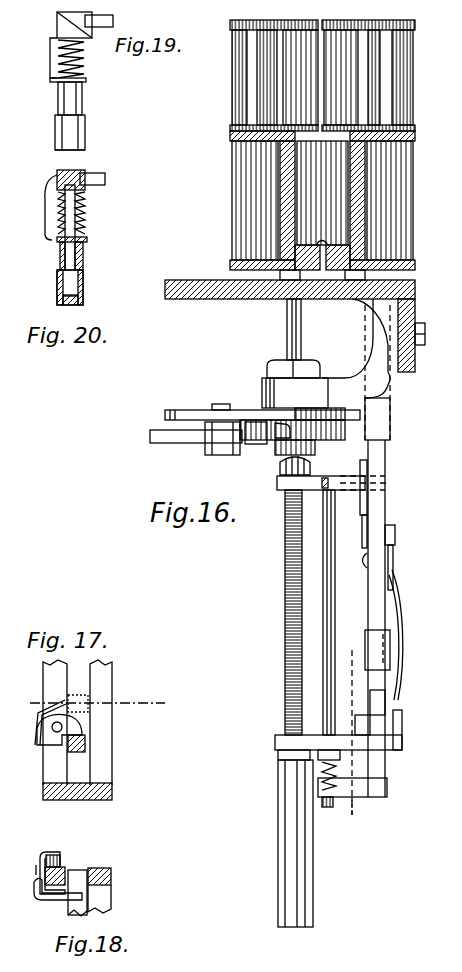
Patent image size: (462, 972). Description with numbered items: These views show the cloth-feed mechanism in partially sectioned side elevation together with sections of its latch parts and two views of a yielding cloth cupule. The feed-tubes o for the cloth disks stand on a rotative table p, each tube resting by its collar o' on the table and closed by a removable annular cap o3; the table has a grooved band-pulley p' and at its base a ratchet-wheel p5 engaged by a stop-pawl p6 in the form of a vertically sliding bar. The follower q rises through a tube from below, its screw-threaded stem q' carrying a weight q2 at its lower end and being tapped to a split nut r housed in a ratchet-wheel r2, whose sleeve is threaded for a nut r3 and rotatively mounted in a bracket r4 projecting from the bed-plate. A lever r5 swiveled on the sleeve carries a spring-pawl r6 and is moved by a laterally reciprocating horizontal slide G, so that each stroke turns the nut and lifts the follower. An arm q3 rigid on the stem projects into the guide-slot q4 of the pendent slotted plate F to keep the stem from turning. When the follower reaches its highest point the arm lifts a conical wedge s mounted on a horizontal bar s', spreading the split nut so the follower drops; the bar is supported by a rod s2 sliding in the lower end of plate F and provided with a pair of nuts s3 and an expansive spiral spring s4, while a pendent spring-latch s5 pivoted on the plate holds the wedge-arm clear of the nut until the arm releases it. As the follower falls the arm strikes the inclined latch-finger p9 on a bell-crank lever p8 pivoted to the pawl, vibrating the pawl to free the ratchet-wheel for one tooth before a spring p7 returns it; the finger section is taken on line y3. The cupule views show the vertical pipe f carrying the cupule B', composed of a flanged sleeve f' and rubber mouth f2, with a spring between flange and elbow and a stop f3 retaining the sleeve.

In FIG. 16, the annular cap o3 is at (322, 23).
In FIG. 16, the feed-tube o is at (322, 145).
In FIG. 16, the collar o' is at (327, 117).
In FIG. 16, the rotative table p is at (314, 205).
In FIG. 16, the band-pulley p' is at (290, 282).
In FIG. 16, the ratchet-wheel p5 is at (365, 277).
In FIG. 16, the stop-pawl p6 is at (370, 304).
In FIG. 16, the screw-threaded stem q' is at (275, 517).
In FIG. 16, the nut r3 is at (300, 369).
In FIG. 16, the bracket r4 is at (295, 393).
In FIG. 16, the lever r5 is at (195, 411).
In FIG. 16, the split nut r is at (278, 463).
In FIG. 16, the horizontal slide G is at (184, 443).
In FIG. 16, the ratchet-wheel r2 is at (248, 445).
In FIG. 16, the spring-pawl r6 is at (278, 432).
In FIG. 16, the conical wedge s is at (289, 465).
In FIG. 16, the horizontal bar s' is at (322, 487).
In FIG. 16, the spring-latch s5 is at (355, 495).
In FIG. 16, the rod s2 is at (345, 612).
In FIG. 16, the pendent slotted plate F is at (377, 627).
In FIG. 17, the pendent slotted plate F is at (77, 730).
In FIG. 18, the pendent slotted plate F is at (100, 895).
In FIG. 16, the nuts s3 is at (338, 755).
In FIG. 16, the expansive spiral spring s4 is at (337, 772).
In FIG. 16, the section line y3 is at (348, 816).
In FIG. 16, the weight q2 is at (295, 854).
In FIG. 19, the stop f3 is at (42, 58).
In FIG. 20, the stop f3 is at (45, 207).
In FIG. 19, the vertical pipe f is at (85, 45).
In FIG. 19, the flanged sleeve f' is at (84, 96).
In FIG. 20, the flanged sleeve f' is at (70, 220).
In FIG. 19, the cupule B' is at (79, 127).
In FIG. 20, the cupule B' is at (80, 283).
In FIG. 19, the rubber mouth f2 is at (75, 140).
In FIG. 20, the rubber mouth f2 is at (79, 300).
In FIG. 17, the spring p7 is at (40, 704).
In FIG. 17, the guide-slot q4 is at (97, 691).
In FIG. 17, the latch-finger p9 is at (78, 725).
In FIG. 18, the latch-finger p9 is at (72, 902).
In FIG. 17, the arm q3 is at (86, 748).
In FIG. 18, the bell-crank lever p8 is at (60, 862).
In FIG. 18, the follower q is at (80, 880).